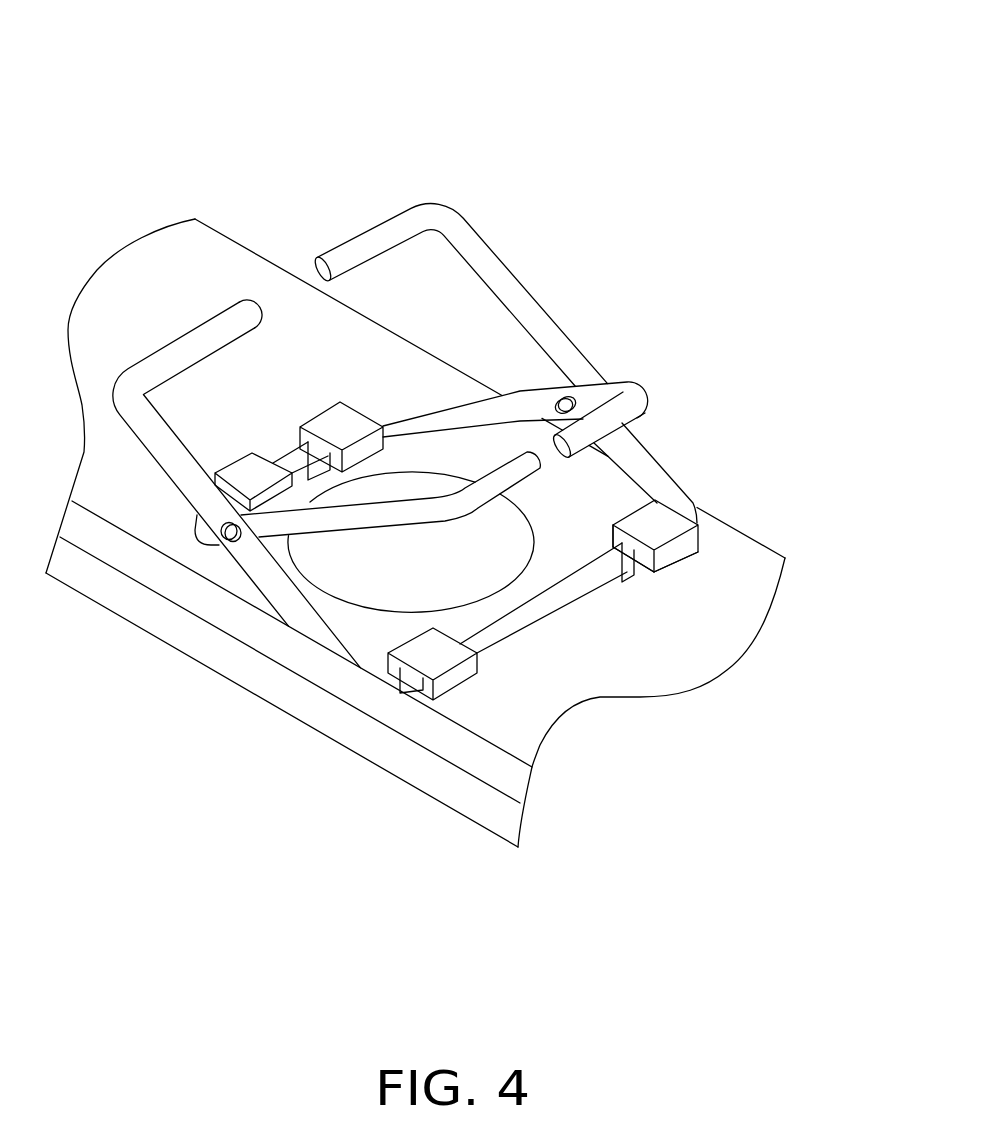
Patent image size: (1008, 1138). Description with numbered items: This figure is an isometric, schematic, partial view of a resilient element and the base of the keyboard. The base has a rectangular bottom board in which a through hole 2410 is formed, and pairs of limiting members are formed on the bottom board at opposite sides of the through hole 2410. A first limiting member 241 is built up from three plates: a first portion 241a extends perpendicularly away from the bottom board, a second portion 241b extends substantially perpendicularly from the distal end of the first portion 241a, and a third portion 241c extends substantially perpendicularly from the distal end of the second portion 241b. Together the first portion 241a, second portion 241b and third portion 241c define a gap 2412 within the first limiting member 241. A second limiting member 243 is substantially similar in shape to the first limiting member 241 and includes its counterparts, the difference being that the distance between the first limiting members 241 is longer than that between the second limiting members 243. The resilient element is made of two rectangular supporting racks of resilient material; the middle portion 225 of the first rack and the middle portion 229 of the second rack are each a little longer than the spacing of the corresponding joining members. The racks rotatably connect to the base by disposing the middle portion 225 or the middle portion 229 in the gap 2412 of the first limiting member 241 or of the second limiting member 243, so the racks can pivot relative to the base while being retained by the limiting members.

The middle portion 225 is at (293, 463).
The middle portion 229 is at (517, 620).
The first limiting member 241 is at (658, 528).
The first portion 241a is at (628, 552).
The second portion 241b is at (643, 547).
The third portion 241c is at (655, 562).
The through hole 2410 is at (495, 550).
The gap 2412 is at (622, 545).
The second limiting member 243 is at (337, 428).